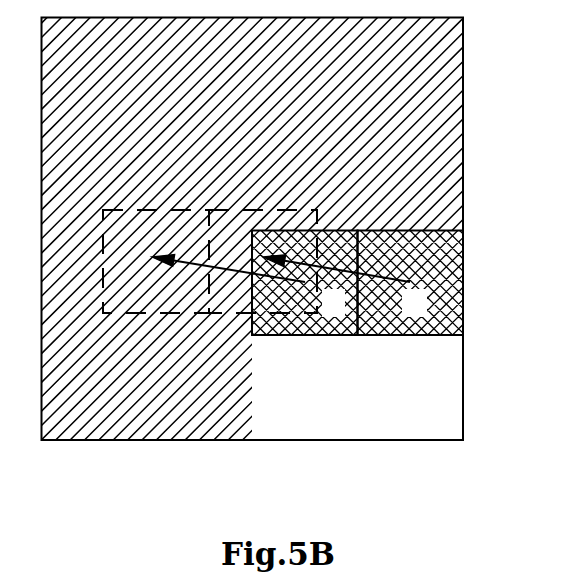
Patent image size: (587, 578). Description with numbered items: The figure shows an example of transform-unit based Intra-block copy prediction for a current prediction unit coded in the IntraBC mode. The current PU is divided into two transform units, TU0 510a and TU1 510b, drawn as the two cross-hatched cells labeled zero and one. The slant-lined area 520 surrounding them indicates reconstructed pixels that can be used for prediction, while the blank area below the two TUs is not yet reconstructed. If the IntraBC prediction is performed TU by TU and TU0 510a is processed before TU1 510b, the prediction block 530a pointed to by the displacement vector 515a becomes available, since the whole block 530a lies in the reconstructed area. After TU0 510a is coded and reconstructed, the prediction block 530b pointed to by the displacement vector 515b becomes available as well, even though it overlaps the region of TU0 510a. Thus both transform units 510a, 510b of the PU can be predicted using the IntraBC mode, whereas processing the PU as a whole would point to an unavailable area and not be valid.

The hatched background region 520 is at (305, 128).
The TU0 510a is at (310, 335).
The TU1 510b is at (413, 335).
The prediction block 530a is at (132, 313).
The prediction block 530b is at (228, 313).
The displacement vector 515a is at (228, 269).
The displacement vector 515b is at (342, 270).